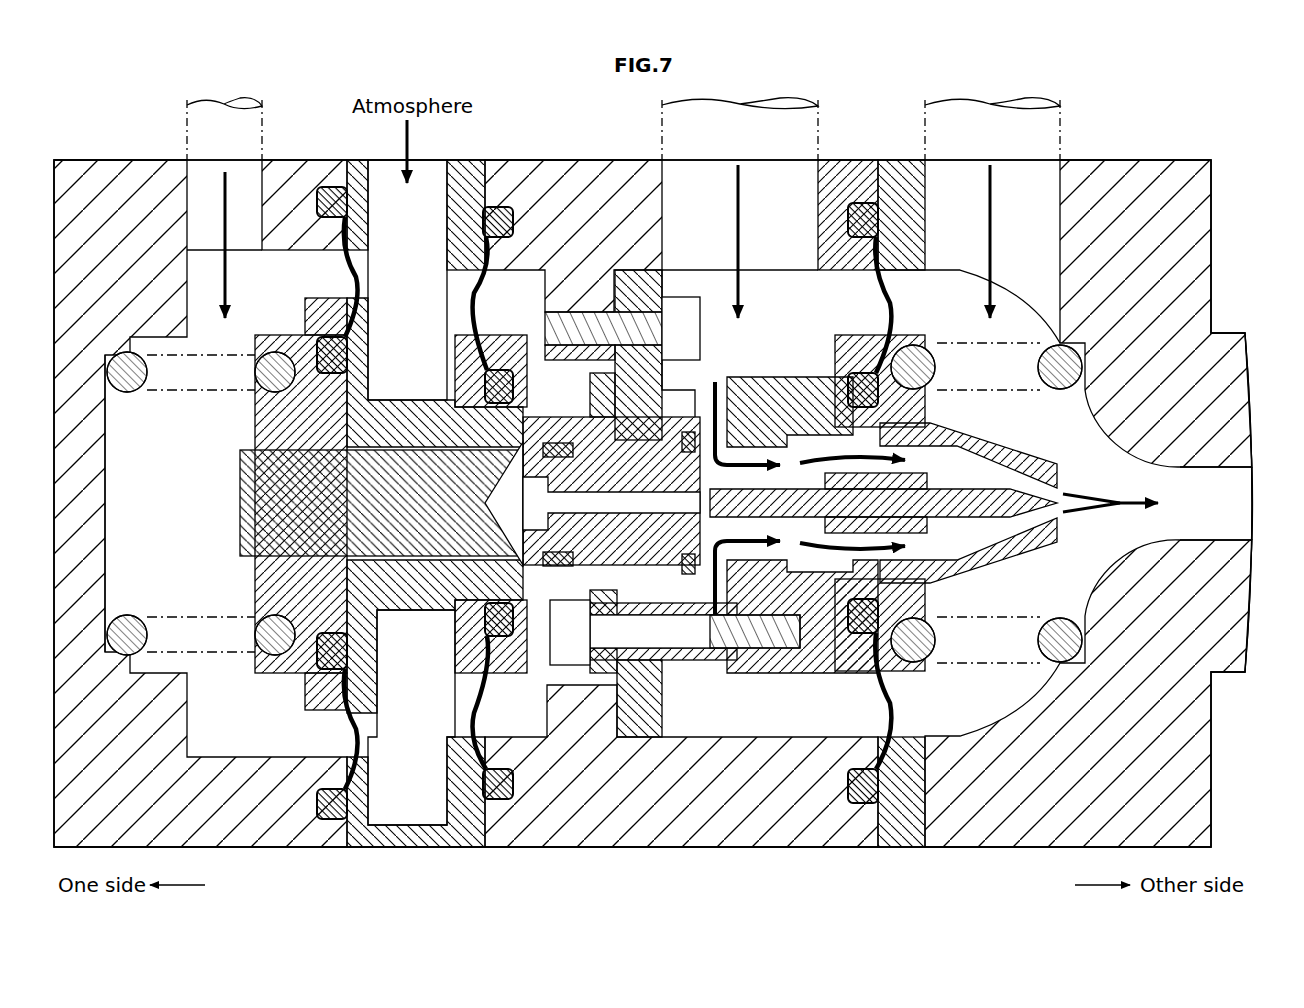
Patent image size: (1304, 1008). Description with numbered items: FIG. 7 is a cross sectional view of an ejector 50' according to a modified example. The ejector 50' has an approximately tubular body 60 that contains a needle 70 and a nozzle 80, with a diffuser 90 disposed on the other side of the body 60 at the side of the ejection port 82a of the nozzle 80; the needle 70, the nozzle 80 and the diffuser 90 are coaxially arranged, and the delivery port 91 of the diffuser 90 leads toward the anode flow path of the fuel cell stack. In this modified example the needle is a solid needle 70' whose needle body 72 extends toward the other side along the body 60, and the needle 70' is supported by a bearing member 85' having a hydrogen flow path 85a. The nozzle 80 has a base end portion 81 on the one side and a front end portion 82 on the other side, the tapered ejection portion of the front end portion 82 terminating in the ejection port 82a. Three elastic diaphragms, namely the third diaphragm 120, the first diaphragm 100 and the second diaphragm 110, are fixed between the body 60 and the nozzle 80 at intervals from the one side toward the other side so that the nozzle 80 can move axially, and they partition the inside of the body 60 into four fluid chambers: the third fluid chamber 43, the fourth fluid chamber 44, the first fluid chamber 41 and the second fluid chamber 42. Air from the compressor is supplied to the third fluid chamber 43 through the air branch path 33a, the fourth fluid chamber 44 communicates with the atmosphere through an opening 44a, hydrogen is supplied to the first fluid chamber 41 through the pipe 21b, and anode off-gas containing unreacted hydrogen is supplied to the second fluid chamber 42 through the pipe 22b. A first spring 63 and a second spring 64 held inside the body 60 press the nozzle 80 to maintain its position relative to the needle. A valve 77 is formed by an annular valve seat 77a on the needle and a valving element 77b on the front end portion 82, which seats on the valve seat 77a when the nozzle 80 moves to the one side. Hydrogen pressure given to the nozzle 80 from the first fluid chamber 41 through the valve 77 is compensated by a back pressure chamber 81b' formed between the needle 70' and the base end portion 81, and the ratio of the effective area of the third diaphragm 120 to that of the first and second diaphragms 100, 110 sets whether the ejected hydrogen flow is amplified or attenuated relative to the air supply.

The air branch path 33a is at (185, 112).
The opening 44a is at (445, 172).
The body 60 is at (525, 158).
The pipe 21b is at (820, 106).
The pipe 22b is at (1062, 106).
The diffuser 90 is at (1185, 158).
The ejector 50' is at (662, 503).
The third diaphragm 120 is at (360, 270).
The first diaphragm 100 is at (473, 318).
The fourth fluid chamber 44 is at (407, 280).
The base end portion 81 is at (560, 418).
The valve 77 is at (812, 346).
The annular valve seat 77a is at (700, 400).
The valving element 77b is at (770, 400).
The first fluid chamber 41 is at (742, 289).
The second diaphragm 110 is at (890, 318).
The hydrogen flow path 85a is at (920, 432).
The front end portion 82 is at (1012, 442).
The second fluid chamber 42 is at (986, 364).
The delivery port 91 is at (1228, 508).
The ejection port 82a is at (1062, 515).
The third fluid chamber 43 is at (148, 503).
The first spring 63 is at (128, 614).
The back pressure chamber 81b' is at (435, 668).
The bearing member 85' is at (757, 663).
The solid needle 70' is at (802, 635).
The nozzle 80 is at (745, 680).
The second spring 64 is at (930, 652).
The needle body 72 is at (635, 572).
The needle 70 is at (623, 581).